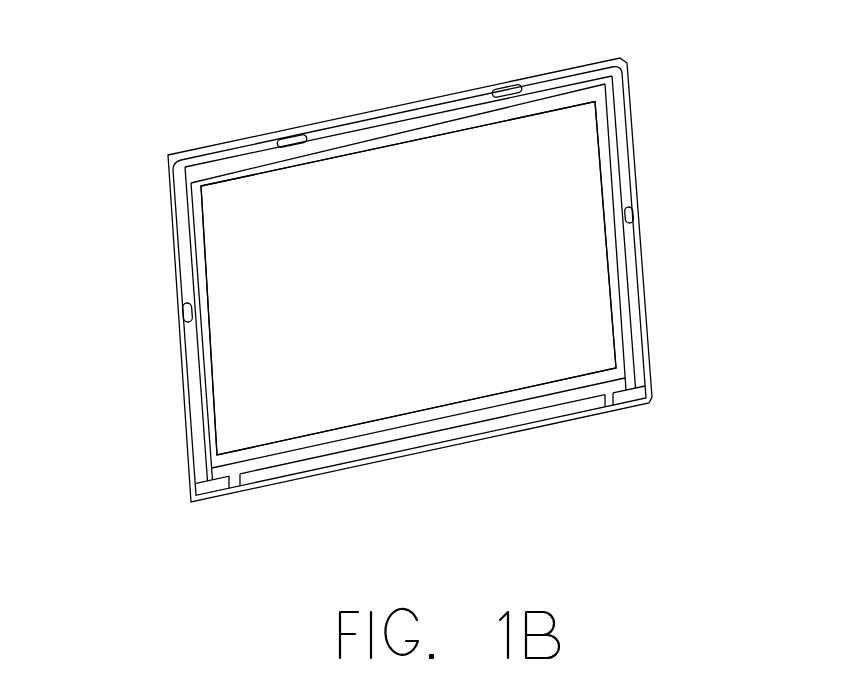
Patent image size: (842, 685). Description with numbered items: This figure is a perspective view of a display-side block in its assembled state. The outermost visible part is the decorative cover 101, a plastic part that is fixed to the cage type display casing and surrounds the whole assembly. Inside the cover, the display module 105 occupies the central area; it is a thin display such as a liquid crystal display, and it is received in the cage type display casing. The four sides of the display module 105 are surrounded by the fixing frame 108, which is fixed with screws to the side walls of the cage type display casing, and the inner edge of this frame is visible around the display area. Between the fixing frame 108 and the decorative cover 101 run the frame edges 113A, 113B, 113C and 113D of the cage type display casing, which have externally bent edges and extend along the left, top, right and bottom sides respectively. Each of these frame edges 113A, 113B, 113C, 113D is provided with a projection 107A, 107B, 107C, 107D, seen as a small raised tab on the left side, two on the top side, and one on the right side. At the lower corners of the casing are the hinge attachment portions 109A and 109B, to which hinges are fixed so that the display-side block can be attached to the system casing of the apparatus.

The decorative cover 101 is at (186, 407).
The display module 105 is at (410, 298).
The fixing frame 108 is at (372, 149).
The frame edge 113A is at (198, 357).
The frame edge 113B is at (393, 115).
The frame edge 113C is at (626, 290).
The frame edge 113D is at (424, 432).
The projection 107A is at (184, 308).
The projection 107B is at (283, 137).
The projection 107C is at (503, 84).
The projection 107D is at (633, 212).
The hinge attachment portion 109A is at (239, 505).
The hinge attachment portion 109B is at (612, 424).